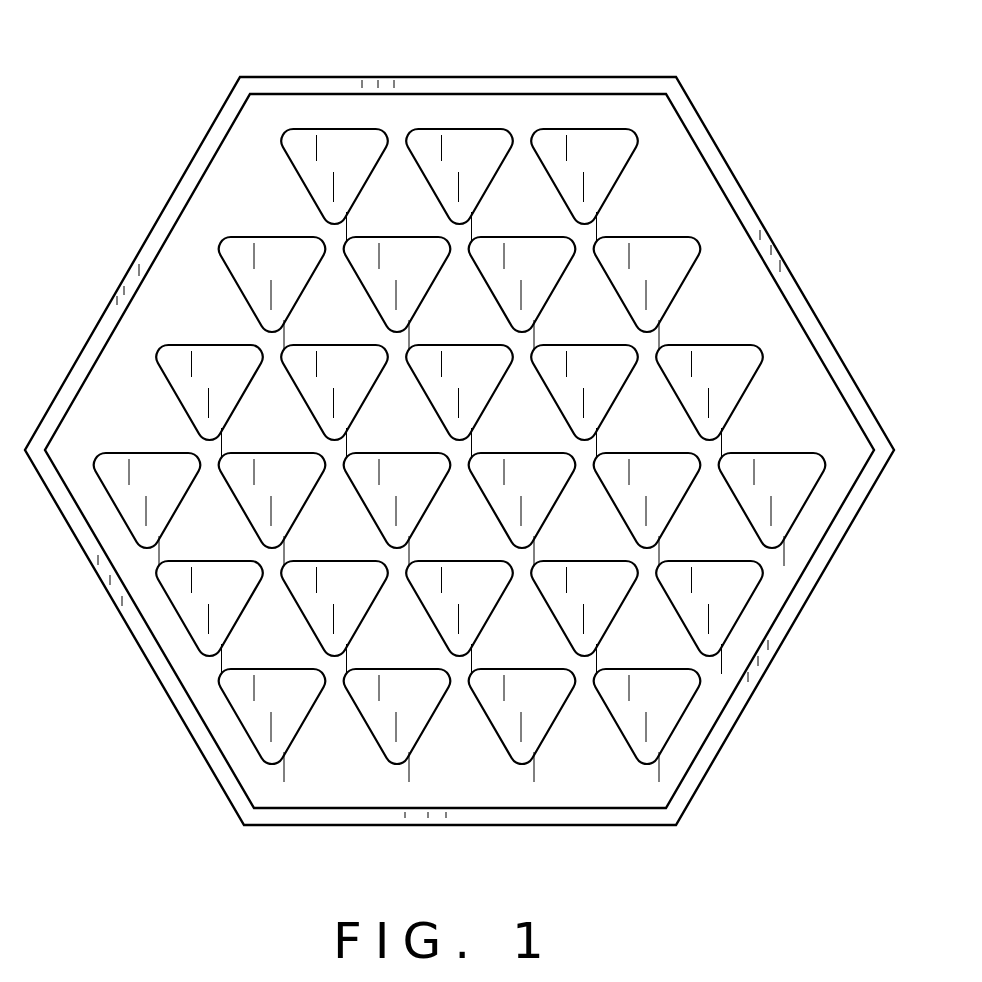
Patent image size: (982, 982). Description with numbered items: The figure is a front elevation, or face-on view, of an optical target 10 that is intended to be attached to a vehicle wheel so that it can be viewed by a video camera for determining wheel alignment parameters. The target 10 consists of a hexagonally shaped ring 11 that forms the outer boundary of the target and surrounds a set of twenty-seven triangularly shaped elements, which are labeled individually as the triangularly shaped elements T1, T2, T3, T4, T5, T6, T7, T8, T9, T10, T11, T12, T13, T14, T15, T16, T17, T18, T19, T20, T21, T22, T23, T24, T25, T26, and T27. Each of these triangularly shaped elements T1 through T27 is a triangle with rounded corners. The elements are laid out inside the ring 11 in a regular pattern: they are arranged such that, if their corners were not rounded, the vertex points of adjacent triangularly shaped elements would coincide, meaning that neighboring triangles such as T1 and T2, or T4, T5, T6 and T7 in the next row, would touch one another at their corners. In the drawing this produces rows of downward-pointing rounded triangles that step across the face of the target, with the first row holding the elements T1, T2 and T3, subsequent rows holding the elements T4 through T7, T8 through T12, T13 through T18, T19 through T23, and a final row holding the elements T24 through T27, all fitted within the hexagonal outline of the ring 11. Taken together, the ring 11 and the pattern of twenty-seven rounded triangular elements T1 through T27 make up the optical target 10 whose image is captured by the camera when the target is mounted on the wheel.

The optical target 10 is at (444, 83).
The hexagonally shaped ring 11 is at (357, 77).
The triangularly shaped element T1 is at (329, 129).
The triangularly shaped element T2 is at (480, 128).
The triangularly shaped element T3 is at (600, 126).
The triangularly shaped element T4 is at (292, 237).
The triangularly shaped element T5 is at (418, 237).
The triangularly shaped element T6 is at (547, 237).
The triangularly shaped element T7 is at (634, 237).
The triangularly shaped element T8 is at (219, 345).
The triangularly shaped element T9 is at (355, 345).
The triangularly shaped element T10 is at (490, 345).
The triangularly shaped element T11 is at (615, 345).
The triangularly shaped element T12 is at (697, 345).
The triangularly shaped element T13 is at (160, 453).
The triangularly shaped element T14 is at (302, 453).
The triangularly shaped element T15 is at (425, 453).
The triangularly shaped element T16 is at (550, 453).
The triangularly shaped element T17 is at (669, 453).
The triangularly shaped element T18 is at (760, 452).
The triangularly shaped element T19 is at (209, 562).
The triangularly shaped element T20 is at (333, 562).
The triangularly shaped element T21 is at (458, 562).
The triangularly shaped element T22 is at (583, 562).
The triangularly shaped element T23 is at (704, 562).
The triangularly shaped element T24 is at (273, 670).
The triangularly shaped element T25 is at (396, 670).
The triangularly shaped element T26 is at (521, 670).
The triangularly shaped element T27 is at (643, 670).